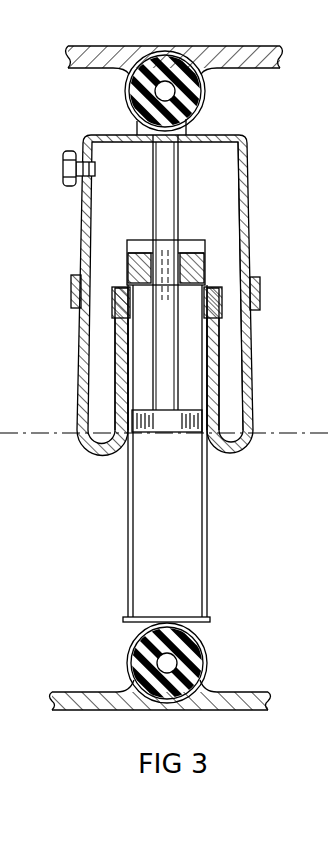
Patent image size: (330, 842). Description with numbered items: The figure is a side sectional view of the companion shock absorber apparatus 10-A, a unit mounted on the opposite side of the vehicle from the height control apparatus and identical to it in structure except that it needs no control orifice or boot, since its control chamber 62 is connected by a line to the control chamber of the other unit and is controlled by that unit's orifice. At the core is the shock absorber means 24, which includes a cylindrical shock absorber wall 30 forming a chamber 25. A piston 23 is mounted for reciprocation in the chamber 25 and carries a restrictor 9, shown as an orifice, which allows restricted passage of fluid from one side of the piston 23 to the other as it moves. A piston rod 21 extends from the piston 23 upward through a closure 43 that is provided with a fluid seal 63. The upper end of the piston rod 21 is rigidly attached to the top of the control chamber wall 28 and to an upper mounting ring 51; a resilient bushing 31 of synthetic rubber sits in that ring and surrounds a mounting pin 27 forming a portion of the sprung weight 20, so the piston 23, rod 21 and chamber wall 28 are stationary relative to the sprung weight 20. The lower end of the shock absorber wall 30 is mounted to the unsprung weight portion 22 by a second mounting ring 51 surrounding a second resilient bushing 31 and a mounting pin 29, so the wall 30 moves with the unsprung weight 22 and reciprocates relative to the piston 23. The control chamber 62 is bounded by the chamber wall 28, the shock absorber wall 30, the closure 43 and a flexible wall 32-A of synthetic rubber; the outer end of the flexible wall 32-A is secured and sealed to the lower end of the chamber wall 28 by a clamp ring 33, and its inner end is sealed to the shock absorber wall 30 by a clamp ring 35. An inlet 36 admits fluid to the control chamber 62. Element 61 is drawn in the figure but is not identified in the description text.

The sprung weight portion 20 is at (232, 38).
The unsprung weight portion 22 is at (215, 710).
The mounting pin 27 is at (167, 93).
The mounting pin 29 is at (172, 662).
The resilient bushing 31 is at (130, 98).
The mounting ring 51 is at (198, 113).
The companion shock absorber apparatus 10-A is at (242, 138).
The control chamber wall 28 is at (85, 225).
The flexible wall 32-A is at (250, 362).
The control chamber 62 is at (222, 238).
The inlet 36 is at (63, 163).
The clamp ring 33 is at (71, 292).
The clamp ring 35 is at (112, 308).
The shock absorber means 24 is at (207, 565).
The chamber 25 is at (187, 515).
The shock absorber wall 30 is at (127, 241).
The fluid seal 63 is at (145, 270).
The closure 43 is at (193, 270).
The gland 61 is at (145, 248).
The piston rod 21 is at (163, 183).
The piston 23 is at (158, 433).
The restrictor 9 is at (185, 433).